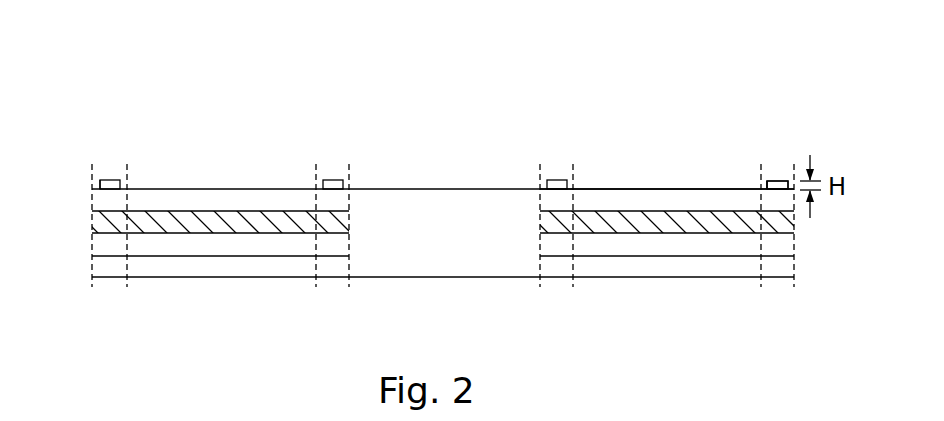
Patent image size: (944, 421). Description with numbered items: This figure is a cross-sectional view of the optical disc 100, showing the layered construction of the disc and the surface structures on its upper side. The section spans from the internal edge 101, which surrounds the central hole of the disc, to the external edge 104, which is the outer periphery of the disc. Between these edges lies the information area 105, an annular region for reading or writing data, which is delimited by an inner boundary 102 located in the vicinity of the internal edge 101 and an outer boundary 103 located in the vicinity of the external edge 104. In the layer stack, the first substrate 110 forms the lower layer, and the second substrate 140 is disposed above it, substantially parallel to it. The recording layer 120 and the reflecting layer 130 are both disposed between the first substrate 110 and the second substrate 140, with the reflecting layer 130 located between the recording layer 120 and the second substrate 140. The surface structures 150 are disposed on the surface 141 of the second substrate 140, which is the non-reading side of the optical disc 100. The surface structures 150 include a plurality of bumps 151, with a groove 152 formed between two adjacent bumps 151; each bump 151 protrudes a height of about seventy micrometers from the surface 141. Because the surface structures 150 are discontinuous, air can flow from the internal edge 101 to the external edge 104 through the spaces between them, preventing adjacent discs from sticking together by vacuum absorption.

The optical disc 100 is at (769, 53).
The internal edge 101 is at (538, 280).
The inner boundary 102 is at (574, 280).
The outer boundary 103 is at (760, 280).
The external edge 104 is at (795, 280).
The information area 105 is at (316, 152).
The first substrate 110 is at (678, 265).
The recording layer 120 is at (632, 243).
The reflecting layer 130 is at (637, 221).
The second substrate 140 is at (597, 199).
The surface 141 is at (673, 189).
The surface structures 150 is at (817, 123).
The bumps 151 is at (108, 179).
The groove 152 is at (98, 184).